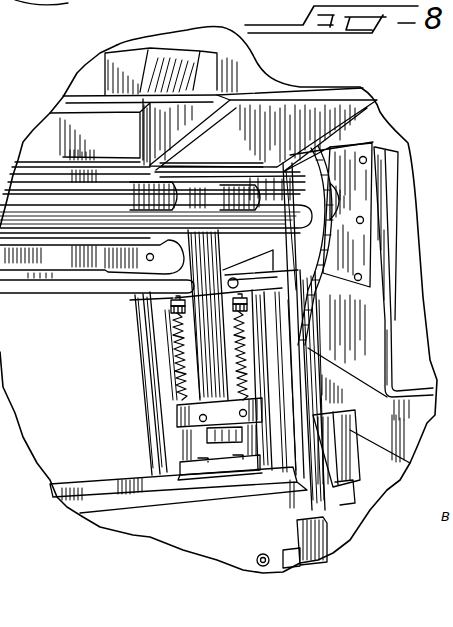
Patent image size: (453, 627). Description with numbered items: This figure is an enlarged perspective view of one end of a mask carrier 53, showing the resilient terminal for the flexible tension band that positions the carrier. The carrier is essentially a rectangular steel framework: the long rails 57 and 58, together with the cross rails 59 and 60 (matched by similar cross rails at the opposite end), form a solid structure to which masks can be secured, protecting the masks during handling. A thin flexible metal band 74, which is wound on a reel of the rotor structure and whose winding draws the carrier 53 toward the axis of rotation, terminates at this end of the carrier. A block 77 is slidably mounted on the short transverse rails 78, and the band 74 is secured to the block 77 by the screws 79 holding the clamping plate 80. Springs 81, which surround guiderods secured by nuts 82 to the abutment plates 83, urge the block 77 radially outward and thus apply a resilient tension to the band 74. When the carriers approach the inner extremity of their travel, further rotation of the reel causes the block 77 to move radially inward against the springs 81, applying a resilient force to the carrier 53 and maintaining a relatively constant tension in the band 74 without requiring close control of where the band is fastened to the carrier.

The mask carrier 53 is at (71, 472).
The long rail 57 is at (43, 297).
The long rail 58 is at (107, 473).
The cross rail 59 is at (143, 362).
The cross rail 60 is at (340, 333).
The flexible band 74 is at (207, 381).
The block 77 is at (177, 420).
The short transverse rail 78 is at (242, 445).
The screw 79 is at (240, 416).
The clamping plate 80 is at (210, 401).
The spring 81 is at (232, 325).
The nut 82 is at (171, 312).
The abutment plate 83 is at (171, 305).